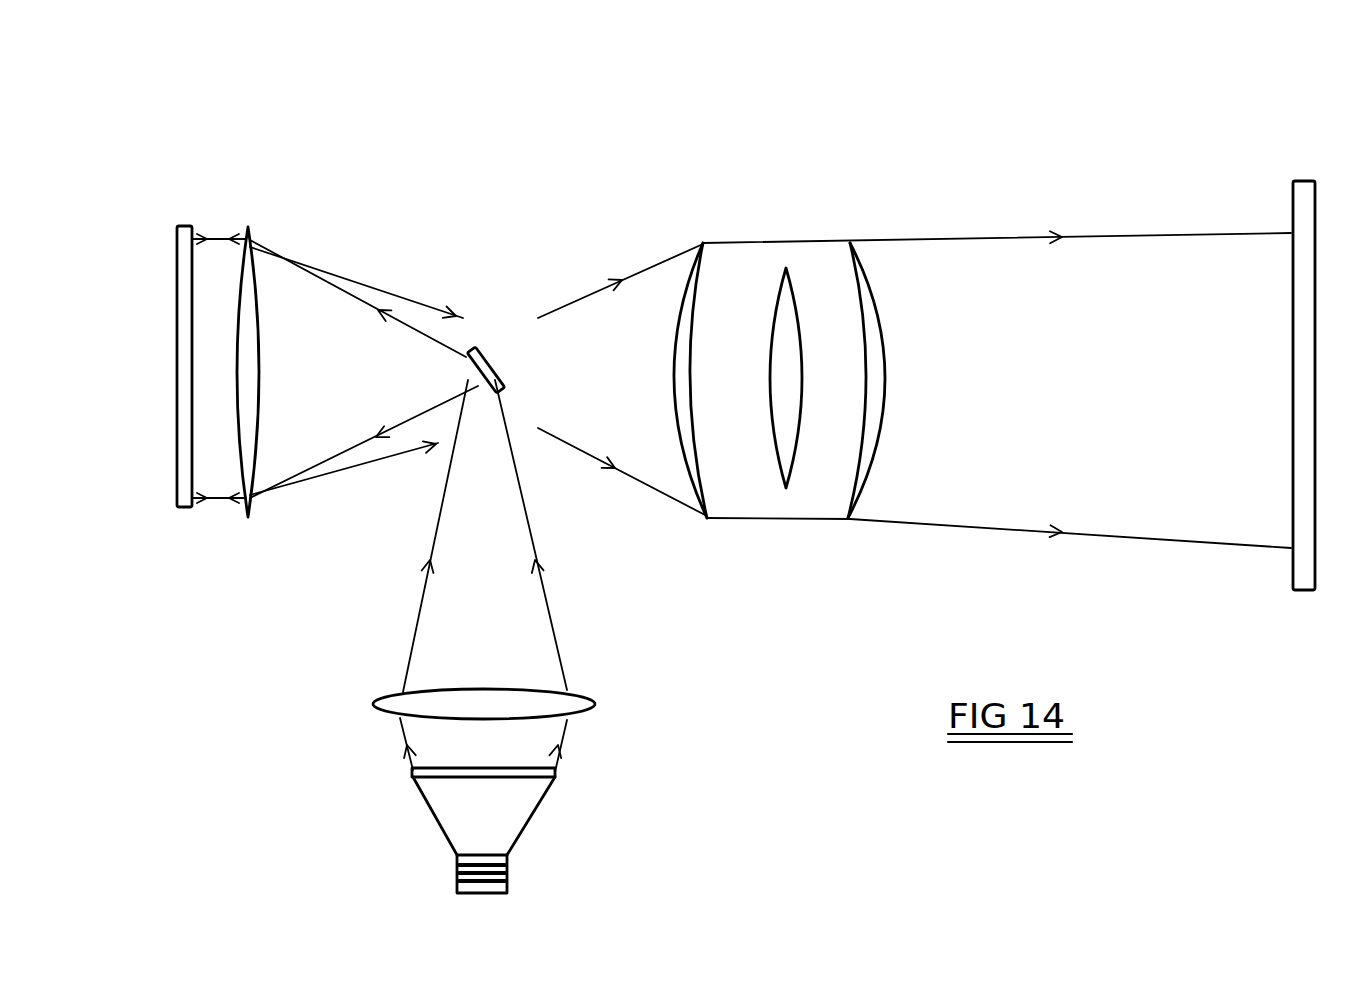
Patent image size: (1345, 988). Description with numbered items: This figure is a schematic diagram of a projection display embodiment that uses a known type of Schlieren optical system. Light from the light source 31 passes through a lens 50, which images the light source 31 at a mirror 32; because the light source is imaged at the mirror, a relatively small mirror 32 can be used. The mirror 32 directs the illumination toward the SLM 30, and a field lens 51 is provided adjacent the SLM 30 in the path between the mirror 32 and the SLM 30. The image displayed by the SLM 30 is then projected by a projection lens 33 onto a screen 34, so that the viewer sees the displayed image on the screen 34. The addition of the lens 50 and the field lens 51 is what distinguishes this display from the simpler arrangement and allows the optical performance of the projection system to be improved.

The spatial light modulator (SLM) 30 is at (185, 234).
The field lens 51 is at (252, 273).
The mirror 32 is at (484, 352).
The projection lens 33 is at (855, 258).
The screen 34 is at (1305, 186).
The lens 50 is at (586, 703).
The light source 31 is at (523, 803).